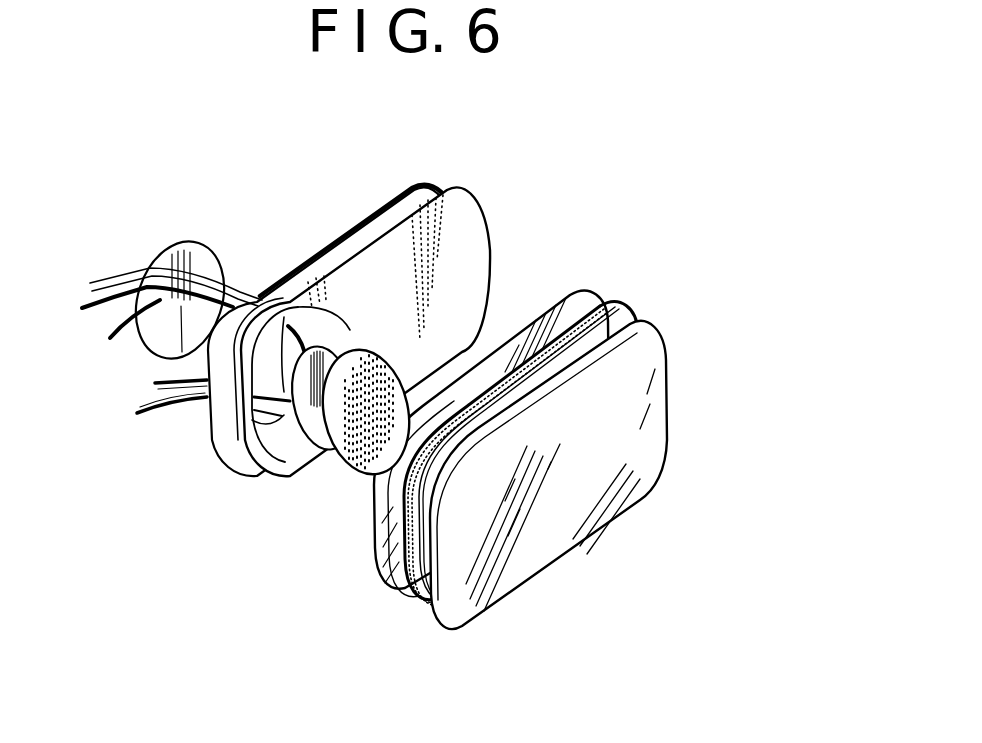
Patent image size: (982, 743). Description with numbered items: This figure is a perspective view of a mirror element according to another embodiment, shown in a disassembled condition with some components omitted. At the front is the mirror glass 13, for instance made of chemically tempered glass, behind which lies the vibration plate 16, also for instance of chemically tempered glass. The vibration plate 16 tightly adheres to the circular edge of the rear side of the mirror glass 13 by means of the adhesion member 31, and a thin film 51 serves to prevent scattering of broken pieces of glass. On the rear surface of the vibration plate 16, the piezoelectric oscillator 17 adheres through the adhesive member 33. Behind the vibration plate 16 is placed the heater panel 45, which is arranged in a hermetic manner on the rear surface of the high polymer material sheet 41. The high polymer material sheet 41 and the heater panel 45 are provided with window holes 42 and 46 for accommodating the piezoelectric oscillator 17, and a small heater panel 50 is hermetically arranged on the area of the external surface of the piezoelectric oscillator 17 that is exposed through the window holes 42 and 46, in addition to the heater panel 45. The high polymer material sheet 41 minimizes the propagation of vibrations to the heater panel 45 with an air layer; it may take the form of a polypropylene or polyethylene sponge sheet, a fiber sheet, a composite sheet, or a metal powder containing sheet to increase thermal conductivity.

The mirror glass 13 is at (633, 483).
The vibration plate 16 is at (588, 300).
The piezoelectric oscillator 17 is at (311, 440).
The adhesion member 31 is at (418, 583).
The adhesive member 33 is at (351, 460).
The high polymer material sheet 41 is at (372, 309).
The window hole 42 is at (333, 322).
The heater panel 45 is at (393, 214).
The window hole 46 is at (290, 303).
The small heater panel 50 is at (164, 260).
The thin film 51 is at (590, 348).